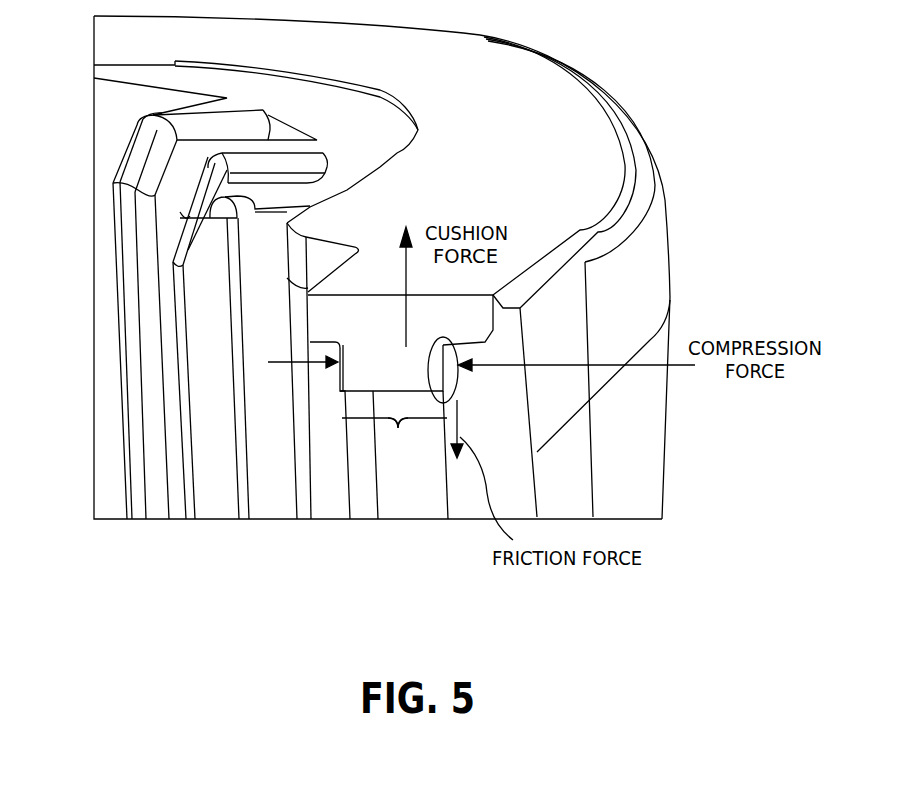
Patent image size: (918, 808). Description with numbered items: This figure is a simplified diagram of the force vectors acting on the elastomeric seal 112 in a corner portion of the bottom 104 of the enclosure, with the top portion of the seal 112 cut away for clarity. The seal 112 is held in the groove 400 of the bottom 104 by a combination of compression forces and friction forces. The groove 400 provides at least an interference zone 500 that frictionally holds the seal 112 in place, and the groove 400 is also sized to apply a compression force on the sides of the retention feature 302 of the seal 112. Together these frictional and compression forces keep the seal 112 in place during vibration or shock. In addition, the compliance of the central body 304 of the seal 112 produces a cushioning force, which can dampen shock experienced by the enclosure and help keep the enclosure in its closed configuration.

The bottom of the enclosure 104 is at (637, 232).
The elastomeric seal 112 is at (562, 155).
The retention feature 302 is at (373, 367).
The central body 304 is at (480, 192).
The groove 400 is at (398, 423).
The interference zone 500 is at (458, 350).